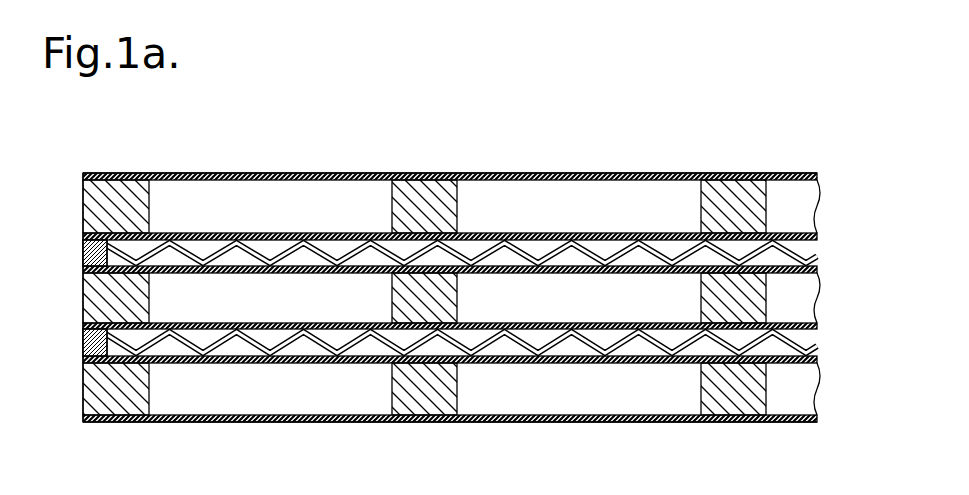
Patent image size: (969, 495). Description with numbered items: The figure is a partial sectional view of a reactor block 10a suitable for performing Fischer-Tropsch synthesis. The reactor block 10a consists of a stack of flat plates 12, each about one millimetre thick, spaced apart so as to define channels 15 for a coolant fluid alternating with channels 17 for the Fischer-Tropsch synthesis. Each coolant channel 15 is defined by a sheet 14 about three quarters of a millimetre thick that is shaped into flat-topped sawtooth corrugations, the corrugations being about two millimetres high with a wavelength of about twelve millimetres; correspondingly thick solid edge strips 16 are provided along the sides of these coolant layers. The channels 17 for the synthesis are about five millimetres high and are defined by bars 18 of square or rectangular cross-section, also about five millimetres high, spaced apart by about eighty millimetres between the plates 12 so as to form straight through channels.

The reactor block 10a is at (591, 158).
The flat plates 12 is at (800, 230).
The sheets 14 is at (800, 246).
The channels for a coolant fluid 15 is at (172, 255).
The solid edge strips 16 is at (84, 250).
The channels for the Fischer-Tropsch synthesis 17 is at (569, 217).
The bars 18 is at (110, 182).